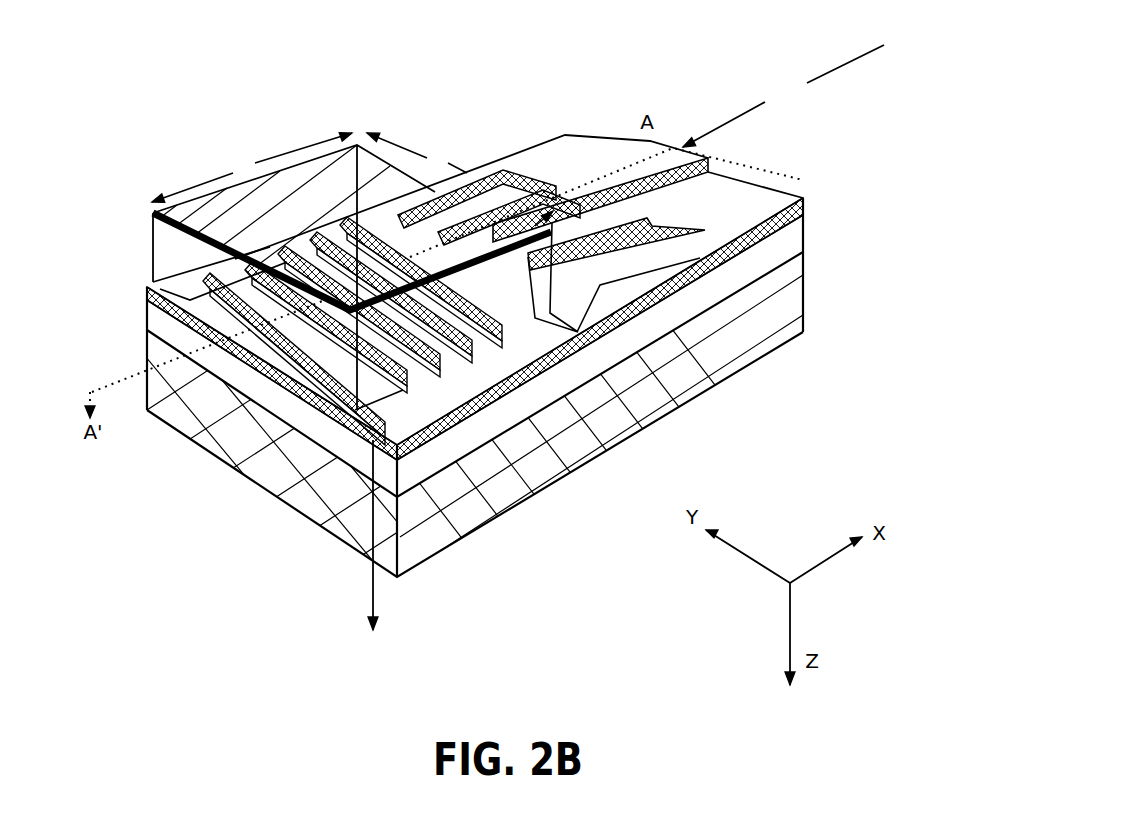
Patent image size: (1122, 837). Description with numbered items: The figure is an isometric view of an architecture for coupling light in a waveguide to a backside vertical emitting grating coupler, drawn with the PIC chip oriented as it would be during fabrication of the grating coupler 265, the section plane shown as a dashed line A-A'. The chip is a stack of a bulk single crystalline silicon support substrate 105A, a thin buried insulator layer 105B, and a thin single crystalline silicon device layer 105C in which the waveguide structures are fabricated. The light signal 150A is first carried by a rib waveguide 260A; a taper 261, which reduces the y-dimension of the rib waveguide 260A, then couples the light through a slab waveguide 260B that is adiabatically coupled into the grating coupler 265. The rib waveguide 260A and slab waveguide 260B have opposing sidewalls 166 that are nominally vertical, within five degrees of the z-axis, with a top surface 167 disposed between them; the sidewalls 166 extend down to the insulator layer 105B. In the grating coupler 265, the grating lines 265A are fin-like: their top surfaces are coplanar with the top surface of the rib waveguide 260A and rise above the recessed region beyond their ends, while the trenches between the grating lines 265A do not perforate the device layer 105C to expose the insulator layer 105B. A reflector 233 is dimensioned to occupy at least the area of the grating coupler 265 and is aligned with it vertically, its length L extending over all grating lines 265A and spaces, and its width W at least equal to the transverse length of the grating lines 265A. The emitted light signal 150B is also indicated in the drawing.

The support substrate 105A is at (238, 455).
The insulator layer 105B is at (630, 271).
The device layer 105C is at (714, 214).
The light signal 150A is at (783, 96).
The output light 150B is at (349, 535).
The sidewalls 166 is at (552, 270).
The top surface 167 is at (578, 232).
The reflector 233 is at (397, 175).
The rib waveguide 260A is at (706, 231).
The slab waveguide 260B is at (477, 272).
The taper 261 is at (600, 285).
The grating coupler 265 is at (108, 177).
The grating lines 265A is at (550, 313).